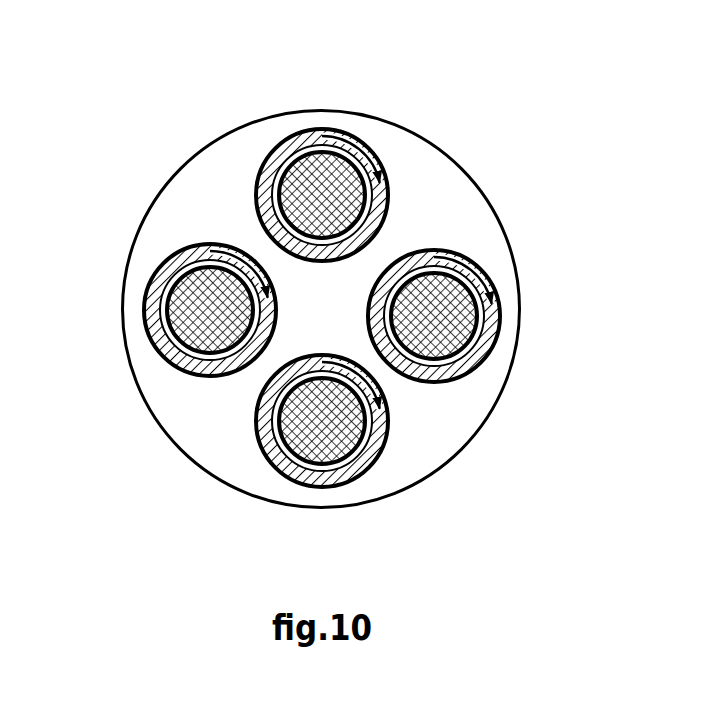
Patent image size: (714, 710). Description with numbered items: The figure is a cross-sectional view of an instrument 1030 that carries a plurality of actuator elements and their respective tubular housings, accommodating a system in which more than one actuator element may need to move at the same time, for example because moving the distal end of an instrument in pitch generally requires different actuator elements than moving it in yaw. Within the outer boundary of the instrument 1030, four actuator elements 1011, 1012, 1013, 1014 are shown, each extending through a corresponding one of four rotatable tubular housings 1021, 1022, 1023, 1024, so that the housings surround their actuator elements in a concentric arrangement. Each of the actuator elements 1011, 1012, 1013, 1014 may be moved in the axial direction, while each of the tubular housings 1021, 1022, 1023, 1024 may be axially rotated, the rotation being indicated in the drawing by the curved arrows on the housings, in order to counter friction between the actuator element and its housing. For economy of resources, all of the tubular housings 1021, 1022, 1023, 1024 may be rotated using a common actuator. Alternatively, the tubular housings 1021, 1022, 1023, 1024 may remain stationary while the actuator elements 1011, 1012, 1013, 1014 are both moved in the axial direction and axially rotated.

The instrument 1030 is at (468, 168).
The actuator element 1011 is at (300, 428).
The actuator element 1012 is at (203, 316).
The actuator element 1013 is at (318, 194).
The actuator element 1014 is at (438, 320).
The rotatable tubular housing 1021 is at (257, 427).
The rotatable tubular housing 1022 is at (165, 262).
The rotatable tubular housing 1023 is at (303, 135).
The rotatable tubular housing 1024 is at (493, 347).